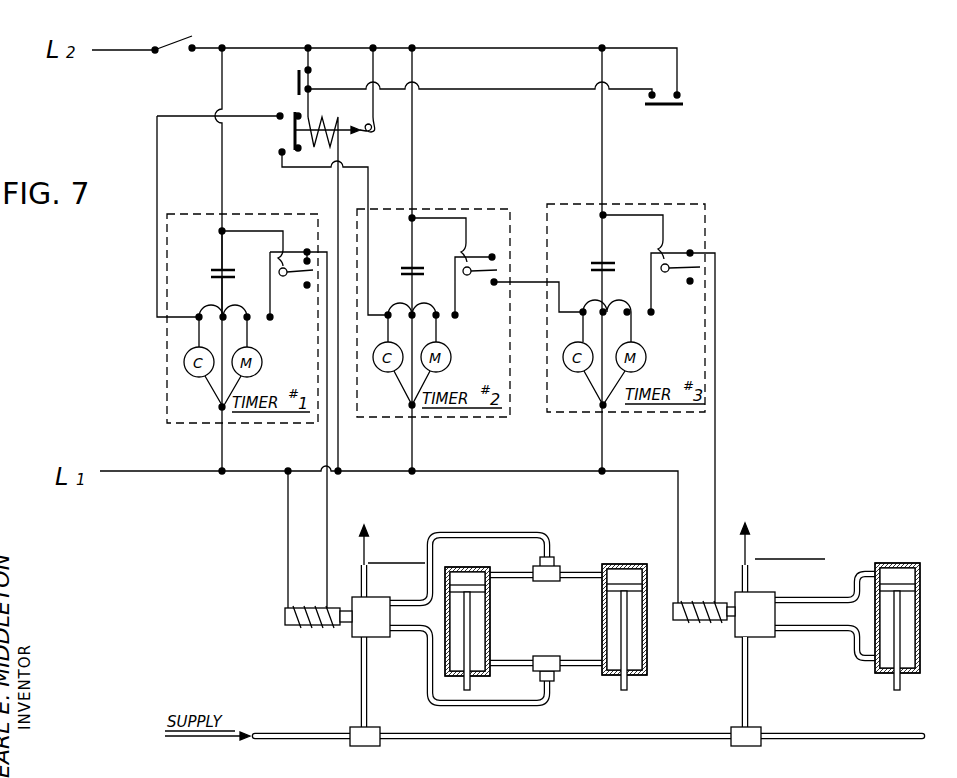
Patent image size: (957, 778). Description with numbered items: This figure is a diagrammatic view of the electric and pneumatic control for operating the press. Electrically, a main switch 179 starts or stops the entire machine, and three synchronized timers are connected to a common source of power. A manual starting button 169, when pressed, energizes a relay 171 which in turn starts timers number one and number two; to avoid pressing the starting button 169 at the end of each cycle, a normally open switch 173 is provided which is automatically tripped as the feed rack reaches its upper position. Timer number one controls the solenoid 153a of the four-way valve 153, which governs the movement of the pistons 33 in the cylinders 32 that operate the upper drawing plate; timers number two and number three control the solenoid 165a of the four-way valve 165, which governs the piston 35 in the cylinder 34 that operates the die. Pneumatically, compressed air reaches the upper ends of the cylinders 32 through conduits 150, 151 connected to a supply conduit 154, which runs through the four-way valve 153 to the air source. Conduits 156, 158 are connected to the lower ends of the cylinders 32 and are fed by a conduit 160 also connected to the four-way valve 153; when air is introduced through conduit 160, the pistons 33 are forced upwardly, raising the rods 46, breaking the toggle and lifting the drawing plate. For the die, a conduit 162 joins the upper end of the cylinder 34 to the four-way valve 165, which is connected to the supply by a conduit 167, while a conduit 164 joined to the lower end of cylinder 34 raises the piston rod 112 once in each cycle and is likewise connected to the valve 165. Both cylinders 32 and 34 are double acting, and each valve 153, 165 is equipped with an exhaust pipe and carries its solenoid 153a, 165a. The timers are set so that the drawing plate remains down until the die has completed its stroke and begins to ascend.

The main switch 179 is at (166, 41).
The manual starting button 169 is at (297, 82).
The relay 171 is at (350, 128).
The normally open switch 173 is at (664, 107).
The supply conduit 154 is at (514, 528).
The conduit 150 is at (507, 576).
The conduit 151 is at (577, 574).
The piston 33 is at (478, 589).
The cylinder 32 is at (490, 622).
The rod 46 is at (471, 688).
The solenoid 153a is at (285, 622).
The four-way valve 153 is at (355, 628).
The conduit 156 is at (508, 673).
The conduit 158 is at (588, 659).
The conduit 160 is at (474, 705).
The solenoid 165a is at (670, 612).
The four-way valve 165 is at (765, 630).
The conduit 162 is at (822, 597).
The conduit 164 is at (830, 630).
The piston 35 is at (906, 590).
The cylinder 34 is at (920, 627).
The piston rod 112 is at (901, 690).
The conduit 167 is at (750, 692).